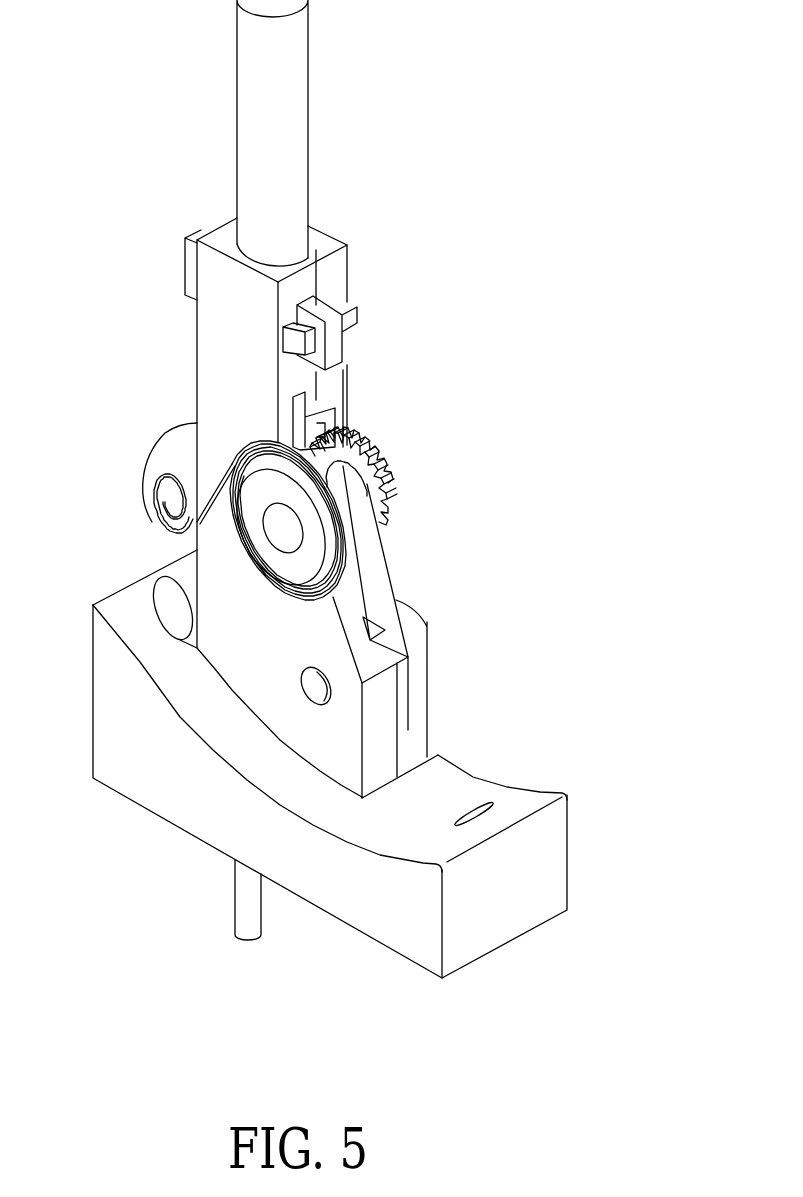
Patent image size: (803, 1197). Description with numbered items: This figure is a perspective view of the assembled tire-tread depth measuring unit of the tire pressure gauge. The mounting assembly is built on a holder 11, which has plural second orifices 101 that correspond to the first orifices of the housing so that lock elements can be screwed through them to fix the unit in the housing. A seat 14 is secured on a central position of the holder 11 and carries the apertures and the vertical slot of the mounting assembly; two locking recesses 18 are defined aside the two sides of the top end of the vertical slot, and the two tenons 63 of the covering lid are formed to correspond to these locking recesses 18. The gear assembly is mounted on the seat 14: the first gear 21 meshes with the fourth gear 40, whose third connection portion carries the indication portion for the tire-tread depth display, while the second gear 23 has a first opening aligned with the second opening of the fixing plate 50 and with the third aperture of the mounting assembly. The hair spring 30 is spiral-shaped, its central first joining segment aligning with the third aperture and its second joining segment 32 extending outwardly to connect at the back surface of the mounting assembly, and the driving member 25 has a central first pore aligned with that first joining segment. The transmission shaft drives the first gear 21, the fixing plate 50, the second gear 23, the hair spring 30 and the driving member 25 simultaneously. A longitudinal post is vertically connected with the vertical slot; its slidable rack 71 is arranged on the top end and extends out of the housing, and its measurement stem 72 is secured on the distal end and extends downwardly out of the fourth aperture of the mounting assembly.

The slidable rack 71 is at (290, 160).
The seat 14 is at (222, 330).
The locking recesses 18 is at (317, 313).
The tenons 63 is at (303, 344).
The fourth gear 40 is at (325, 432).
The second gear 23 is at (382, 455).
The first gear 21 is at (392, 490).
The driving member 25 is at (257, 502).
The second joining segment 32 is at (162, 483).
The hair spring 30 is at (338, 560).
The fixing plate 50 is at (395, 623).
The second orifices 101 is at (175, 606).
The holder 11 is at (160, 768).
The measurement stem 72 is at (245, 905).